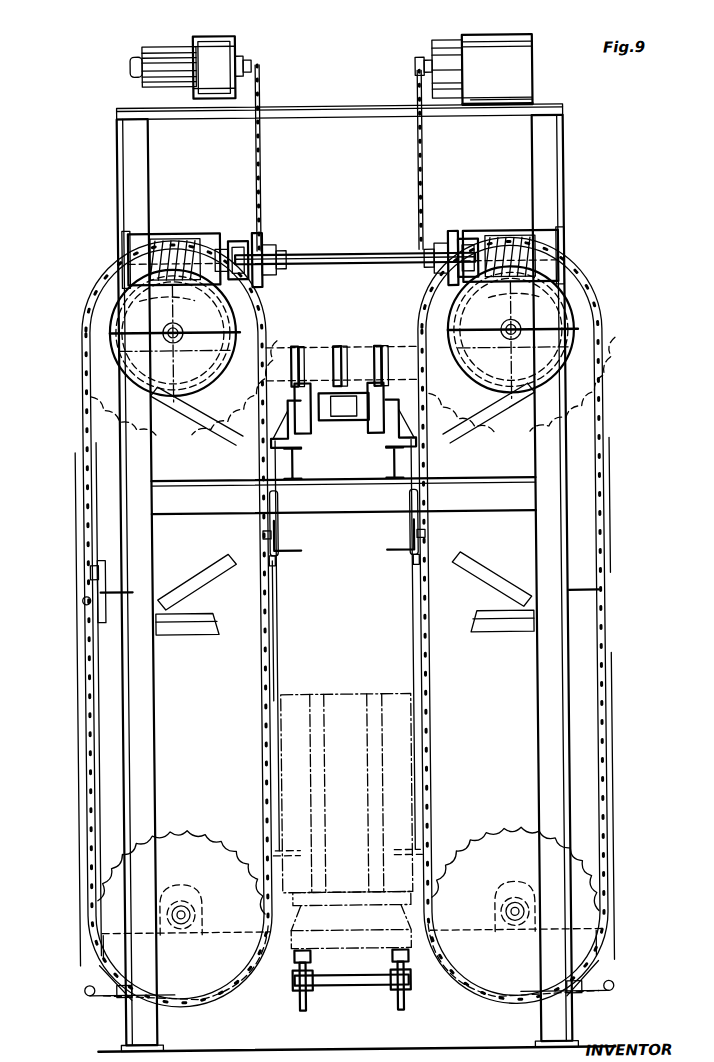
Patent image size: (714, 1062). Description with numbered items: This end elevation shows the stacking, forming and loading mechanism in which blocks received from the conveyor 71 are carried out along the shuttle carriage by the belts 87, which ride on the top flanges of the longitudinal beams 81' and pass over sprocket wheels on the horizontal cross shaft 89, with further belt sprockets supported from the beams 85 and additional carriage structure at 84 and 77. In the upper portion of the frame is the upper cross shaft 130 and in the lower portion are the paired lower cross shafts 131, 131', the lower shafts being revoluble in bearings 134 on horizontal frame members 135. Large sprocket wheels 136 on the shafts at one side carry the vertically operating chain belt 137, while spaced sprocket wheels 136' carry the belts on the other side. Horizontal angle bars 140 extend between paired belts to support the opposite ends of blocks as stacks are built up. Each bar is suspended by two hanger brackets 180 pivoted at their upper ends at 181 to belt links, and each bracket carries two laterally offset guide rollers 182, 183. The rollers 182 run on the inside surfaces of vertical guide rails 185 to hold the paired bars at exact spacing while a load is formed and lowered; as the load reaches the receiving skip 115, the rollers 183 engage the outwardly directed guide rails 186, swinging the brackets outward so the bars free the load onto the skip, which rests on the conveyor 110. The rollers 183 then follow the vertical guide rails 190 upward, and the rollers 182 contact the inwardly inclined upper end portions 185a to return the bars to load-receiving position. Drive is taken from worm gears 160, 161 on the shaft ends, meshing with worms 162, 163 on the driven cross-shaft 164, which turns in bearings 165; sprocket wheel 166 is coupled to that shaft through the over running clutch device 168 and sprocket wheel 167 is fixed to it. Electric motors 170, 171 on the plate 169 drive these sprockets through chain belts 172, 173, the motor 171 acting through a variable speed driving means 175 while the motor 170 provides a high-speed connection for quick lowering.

The electric motor 170 is at (177, 53).
The electric motor 171 is at (440, 46).
The chain belt 172 is at (266, 93).
The chain belt 173 is at (421, 92).
The variable speed driving means 175 is at (513, 86).
The plate 169 is at (342, 113).
The supporting bearing 165 is at (127, 227).
The worm 162 is at (201, 235).
The worm 163 is at (496, 232).
The over running clutch device 168 is at (249, 244).
The sprocket wheel 166 is at (271, 246).
The driven cross-shaft 164 is at (368, 252).
The sprocket wheel 167 is at (418, 210).
The driving worm gear 160 is at (87, 348).
The driving worm gear 161 is at (426, 300).
The upper cross shaft 130 is at (180, 347).
The sprocket wheel 136 is at (155, 629).
The sprocket wheel 136' is at (545, 607).
The conveyor 71 is at (320, 362).
The clamp member 84 is at (390, 400).
The longitudinal beam 81' is at (319, 420).
The belt 87 is at (373, 432).
The horizontal cross shaft 89 is at (351, 430).
The pivot 181 is at (287, 477).
The beam 85 is at (431, 459).
The inwardly inclined upper end portion 185a is at (216, 436).
The vertical guide rail 185 is at (271, 658).
The hanger bracket 180 is at (281, 501).
The guide roller 183 is at (261, 532).
The angle bar 140 is at (303, 548).
The guide roller 182 is at (281, 559).
The cross beam 77 is at (495, 509).
The chain belt 137 is at (269, 633).
The vertical guide rail 190 is at (74, 820).
The skip 115 is at (383, 781).
The bearing 134 is at (179, 888).
The lower cross shaft 131 is at (202, 913).
The lower cross shaft 131' is at (518, 925).
The horizontal frame member 135 is at (233, 989).
The outwardly directed guide rail 186 is at (450, 989).
The conveyor 110 is at (385, 975).